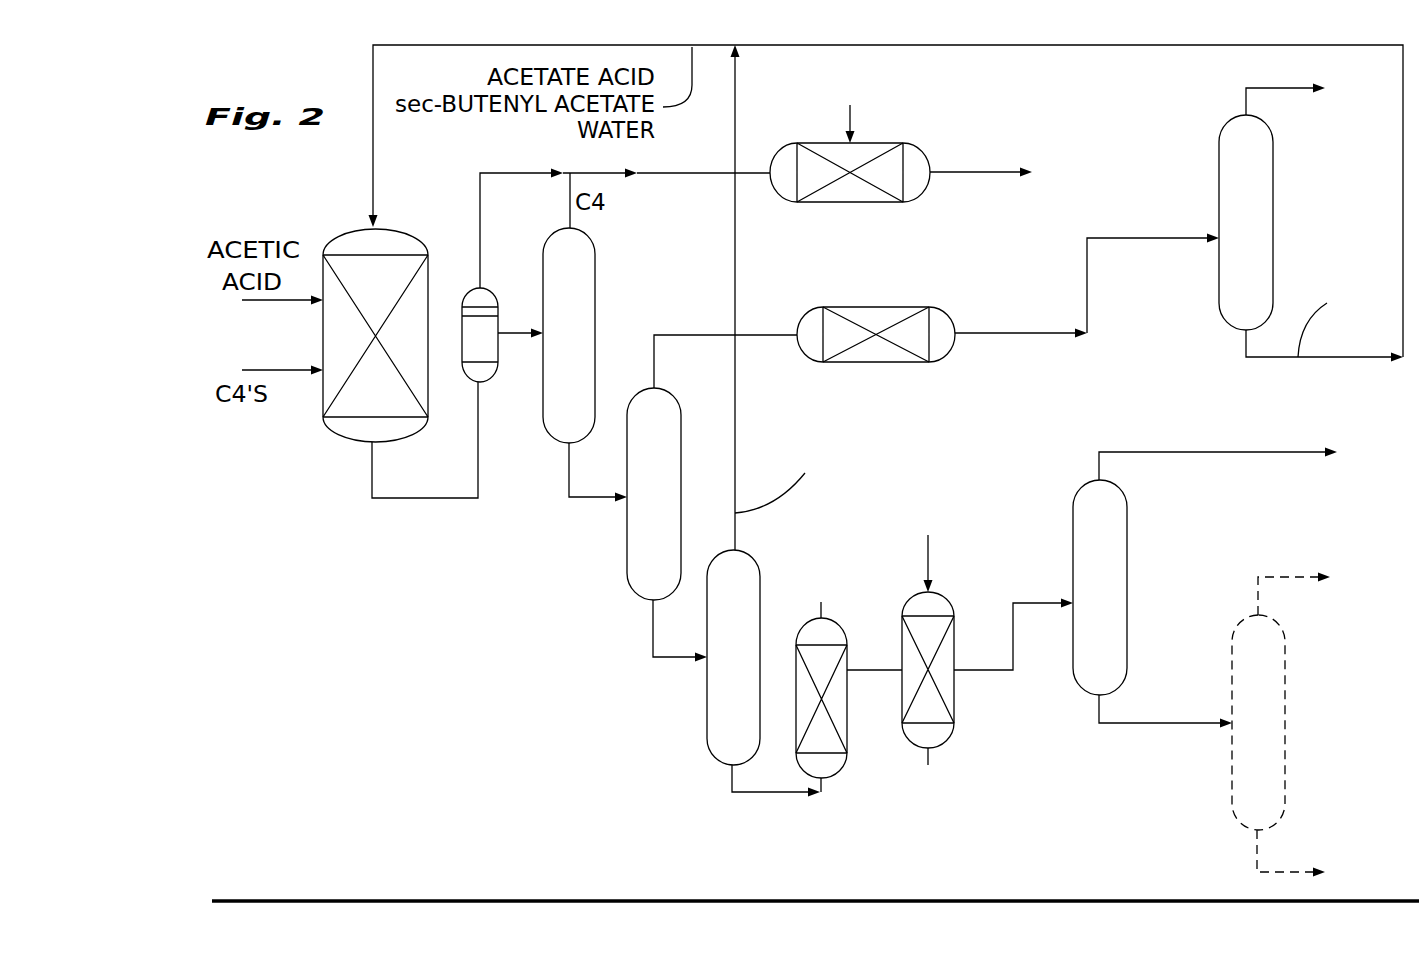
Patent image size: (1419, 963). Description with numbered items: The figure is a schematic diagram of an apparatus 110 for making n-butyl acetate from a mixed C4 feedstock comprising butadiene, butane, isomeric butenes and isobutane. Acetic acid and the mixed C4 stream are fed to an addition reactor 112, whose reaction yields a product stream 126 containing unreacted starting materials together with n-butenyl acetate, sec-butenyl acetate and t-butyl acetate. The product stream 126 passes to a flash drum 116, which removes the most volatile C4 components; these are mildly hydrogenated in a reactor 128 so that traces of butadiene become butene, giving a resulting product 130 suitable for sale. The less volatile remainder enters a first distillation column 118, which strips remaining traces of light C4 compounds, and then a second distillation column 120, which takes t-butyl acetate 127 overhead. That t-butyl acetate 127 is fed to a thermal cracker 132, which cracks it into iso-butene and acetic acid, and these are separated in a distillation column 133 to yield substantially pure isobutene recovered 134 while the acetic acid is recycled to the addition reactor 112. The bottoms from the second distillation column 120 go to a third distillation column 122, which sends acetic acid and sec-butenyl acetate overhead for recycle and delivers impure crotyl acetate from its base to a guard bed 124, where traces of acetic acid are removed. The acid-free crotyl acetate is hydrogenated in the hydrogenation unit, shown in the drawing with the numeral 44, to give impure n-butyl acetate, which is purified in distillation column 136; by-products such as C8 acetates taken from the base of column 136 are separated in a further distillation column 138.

The apparatus 110 is at (515, 716).
The addition reactor 112 is at (338, 438).
The flash drum 116 is at (502, 322).
The first distillation column 118 is at (543, 398).
The second distillation column 120 is at (627, 538).
The third distillation column 122 is at (706, 683).
The guard bed 124 is at (805, 621).
The product stream 126 is at (385, 497).
The t-butyl acetate 127 is at (683, 330).
The reactor 128 is at (875, 143).
The resulting product 130 is at (952, 172).
The thermal cracker 132 is at (862, 307).
The distillation column 133 is at (1273, 250).
The isobutene recovered 134 is at (1285, 88).
The distillation column 136 is at (1127, 572).
The further distillation column 138 is at (1285, 745).
The hydrogenation unit 44 is at (955, 695).